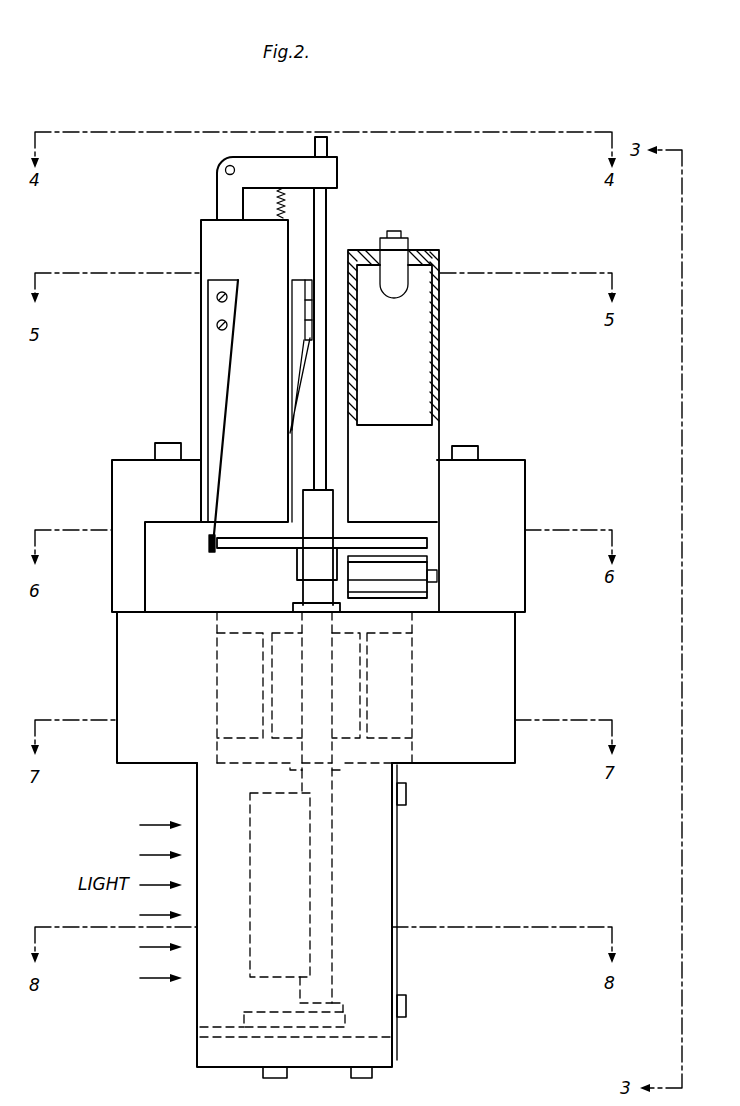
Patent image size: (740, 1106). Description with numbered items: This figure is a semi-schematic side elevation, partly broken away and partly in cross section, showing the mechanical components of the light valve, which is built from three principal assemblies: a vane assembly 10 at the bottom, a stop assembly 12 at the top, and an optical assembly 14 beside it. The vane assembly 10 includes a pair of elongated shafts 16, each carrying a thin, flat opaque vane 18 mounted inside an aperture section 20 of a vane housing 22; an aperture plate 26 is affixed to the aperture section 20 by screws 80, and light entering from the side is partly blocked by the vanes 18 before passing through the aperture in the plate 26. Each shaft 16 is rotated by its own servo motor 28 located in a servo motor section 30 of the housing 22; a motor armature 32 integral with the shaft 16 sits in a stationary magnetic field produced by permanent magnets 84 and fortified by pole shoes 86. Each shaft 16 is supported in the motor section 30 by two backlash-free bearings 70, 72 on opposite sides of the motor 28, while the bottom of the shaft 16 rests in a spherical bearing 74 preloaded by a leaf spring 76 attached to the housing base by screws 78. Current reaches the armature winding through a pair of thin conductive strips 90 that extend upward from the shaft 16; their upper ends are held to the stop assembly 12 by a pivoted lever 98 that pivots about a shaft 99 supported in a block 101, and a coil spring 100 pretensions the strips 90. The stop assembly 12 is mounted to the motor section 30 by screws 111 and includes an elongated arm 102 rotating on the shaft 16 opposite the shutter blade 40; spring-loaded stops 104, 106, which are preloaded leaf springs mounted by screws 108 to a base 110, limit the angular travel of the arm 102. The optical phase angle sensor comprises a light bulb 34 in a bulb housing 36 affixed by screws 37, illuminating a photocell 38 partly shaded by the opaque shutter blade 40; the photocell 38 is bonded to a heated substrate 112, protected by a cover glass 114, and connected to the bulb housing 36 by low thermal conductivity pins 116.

The vane assembly 10 is at (418, 845).
The stop assembly 12 is at (196, 371).
The optical assembly 14 is at (446, 352).
The elongated shafts 16 is at (320, 508).
The opaque vane 18 is at (252, 918).
The aperture section 20 is at (215, 995).
The vane housing 22 is at (222, 790).
The aperture plate 26 is at (399, 896).
The servo motor 28 is at (292, 700).
The servo motor section 30 is at (520, 682).
The motor armature 32 is at (416, 681).
The light bulb 34 is at (402, 290).
The bulb housing 36 is at (441, 312).
The screws 37 is at (468, 450).
The photocell 38 is at (428, 563).
The opaque shutter blade 40 is at (398, 540).
The backlash-free bearing 70 is at (352, 592).
The backlash-free bearing 72 is at (347, 778).
The spherical bearing 74 is at (340, 1002).
The leaf spring 76 is at (244, 1020).
The screws 78 is at (268, 1076).
The screws 80 is at (408, 795).
The permanent magnets 84 is at (218, 618).
The pole shoes 86 is at (232, 740).
The conductive strips 90 is at (328, 226).
The pivoted lever 98 is at (252, 162).
The shaft 99 is at (226, 168).
The coil spring 100 is at (286, 204).
The block 101 is at (218, 198).
The elongated arm 102 is at (214, 550).
The spring-loaded stop 104 is at (298, 374).
The spring-loaded stop 106 is at (224, 440).
The screws 108 is at (308, 298).
The base 110 is at (172, 500).
The screws 111 is at (166, 446).
The substrate 112 is at (428, 591).
The cover glass 114 is at (412, 557).
The pins 116 is at (437, 576).